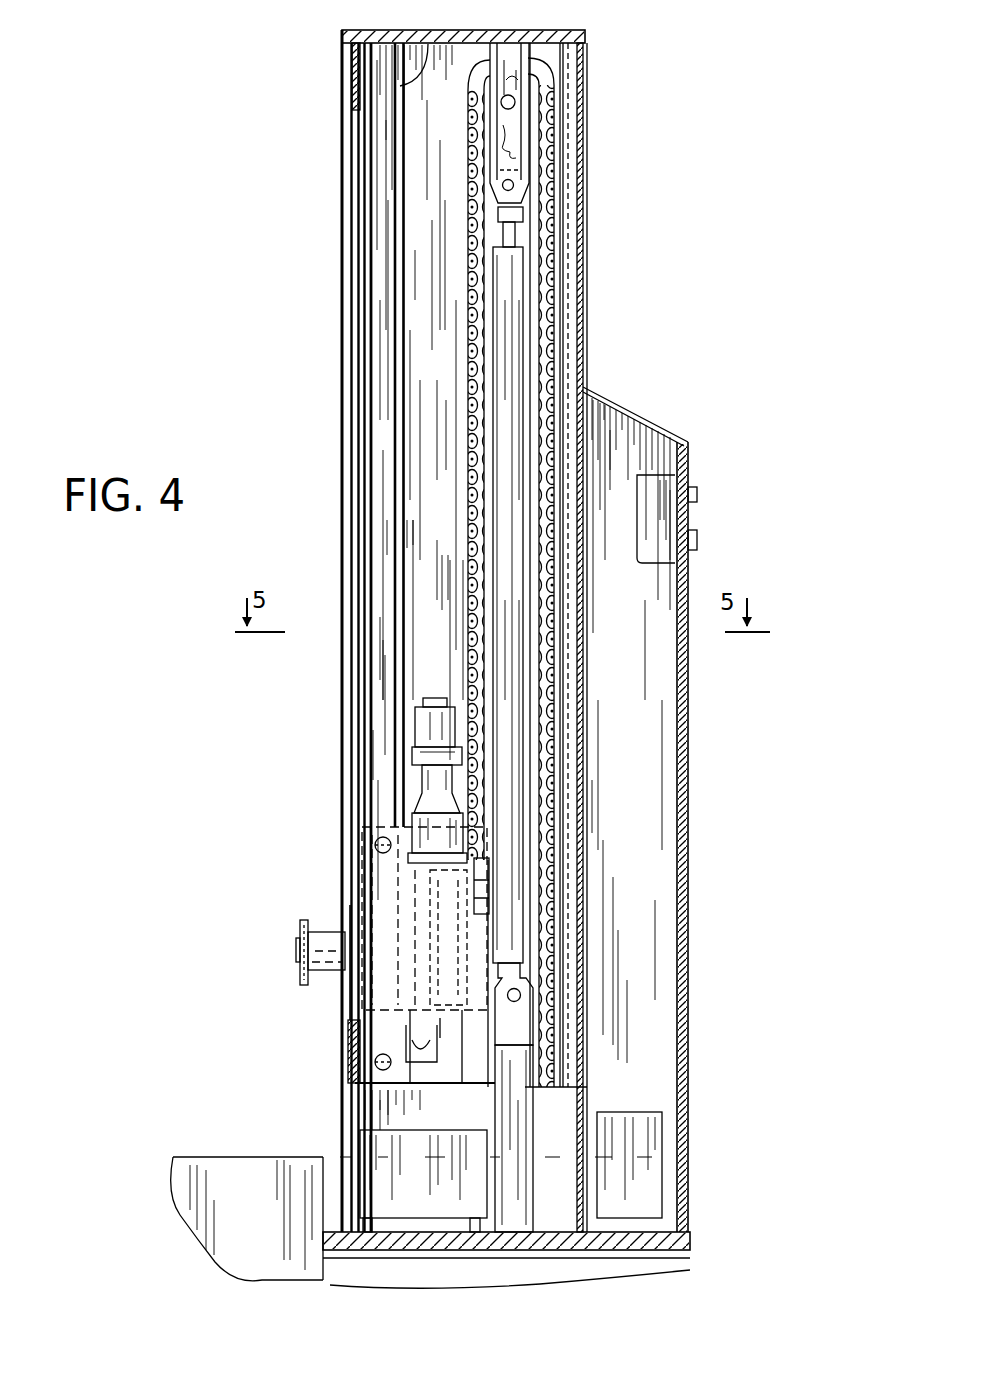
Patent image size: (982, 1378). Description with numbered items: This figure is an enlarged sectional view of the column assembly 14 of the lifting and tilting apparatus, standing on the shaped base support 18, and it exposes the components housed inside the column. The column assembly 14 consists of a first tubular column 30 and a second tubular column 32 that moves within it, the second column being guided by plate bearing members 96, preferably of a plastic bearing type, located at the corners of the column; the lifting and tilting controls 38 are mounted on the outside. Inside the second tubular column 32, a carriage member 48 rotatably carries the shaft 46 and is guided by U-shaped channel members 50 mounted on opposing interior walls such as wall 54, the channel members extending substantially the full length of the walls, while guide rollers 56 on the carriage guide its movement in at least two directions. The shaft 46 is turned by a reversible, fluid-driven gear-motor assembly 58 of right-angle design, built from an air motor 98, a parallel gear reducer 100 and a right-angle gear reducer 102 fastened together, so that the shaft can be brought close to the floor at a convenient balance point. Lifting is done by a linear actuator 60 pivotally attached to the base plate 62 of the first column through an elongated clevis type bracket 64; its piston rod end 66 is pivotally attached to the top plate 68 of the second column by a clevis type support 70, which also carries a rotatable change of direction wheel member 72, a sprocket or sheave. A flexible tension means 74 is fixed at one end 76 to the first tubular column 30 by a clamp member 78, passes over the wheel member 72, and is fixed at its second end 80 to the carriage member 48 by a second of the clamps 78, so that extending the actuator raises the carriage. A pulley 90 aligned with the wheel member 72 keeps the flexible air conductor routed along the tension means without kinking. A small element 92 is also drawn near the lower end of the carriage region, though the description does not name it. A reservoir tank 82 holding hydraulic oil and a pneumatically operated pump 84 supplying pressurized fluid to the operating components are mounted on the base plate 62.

The column assembly 14 is at (232, 310).
The base support 18 is at (222, 1156).
The first tubular column 30 is at (583, 197).
The second tubular column 32 is at (575, 155).
The lifting and tilting controls 38 is at (702, 488).
The shaft 46 is at (300, 950).
The carriage member 48 is at (336, 1006).
The U-shaped channel members 50 is at (427, 42).
The interior wall 54 is at (453, 263).
The guide rollers 56 is at (375, 847).
The gear-motor assembly 58 is at (316, 748).
The linear actuator 60 is at (525, 378).
The base plate 62 is at (556, 1232).
The elongated clevis type bracket 64 is at (527, 1100).
The piston rod end 66 is at (526, 218).
The top plate 68 is at (476, 30).
The clevis type support 70 is at (532, 60).
The change of direction wheel member 72 is at (535, 106).
The flexible tension means 74 is at (468, 318).
The one end of flexible tension means 76 is at (535, 990).
The clamp member 78 is at (490, 893).
The second end of flexible tension means 80 is at (480, 850).
The reservoir tank 82 is at (447, 1195).
The pump 84 is at (645, 1178).
The pulley 90 is at (508, 143).
The sensor 92 is at (405, 1040).
The plate bearing members 96 is at (350, 72).
The air motor 98 is at (425, 702).
The parallel gear reducer 100 is at (410, 812).
The right-angle gear reducer 102 is at (420, 905).